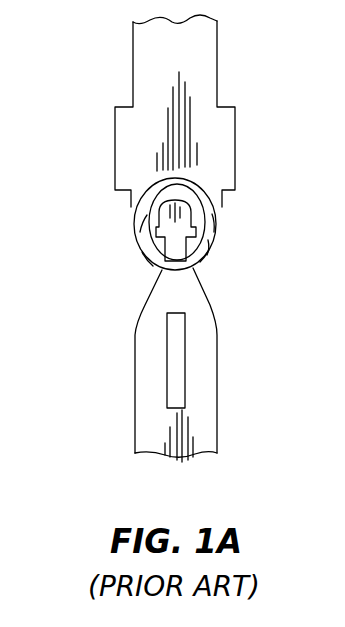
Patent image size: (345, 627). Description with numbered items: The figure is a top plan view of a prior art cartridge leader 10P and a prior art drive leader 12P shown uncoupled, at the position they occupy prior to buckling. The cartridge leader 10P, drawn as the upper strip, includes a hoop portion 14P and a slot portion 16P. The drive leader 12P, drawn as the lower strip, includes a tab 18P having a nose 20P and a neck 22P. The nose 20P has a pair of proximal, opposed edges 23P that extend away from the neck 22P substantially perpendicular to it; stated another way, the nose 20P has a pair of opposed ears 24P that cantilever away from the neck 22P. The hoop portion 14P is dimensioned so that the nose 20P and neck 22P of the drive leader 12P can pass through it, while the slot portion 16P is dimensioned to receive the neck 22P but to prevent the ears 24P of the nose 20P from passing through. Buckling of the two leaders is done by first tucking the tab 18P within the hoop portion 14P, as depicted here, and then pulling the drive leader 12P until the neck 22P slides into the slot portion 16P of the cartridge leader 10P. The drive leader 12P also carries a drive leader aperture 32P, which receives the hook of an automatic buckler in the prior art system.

The cartridge leader 10P is at (218, 57).
The drive leader 12P is at (135, 363).
The hoop portion 14P is at (165, 188).
The slot portion 16P is at (174, 266).
The tab 18P is at (193, 200).
The nose 20P is at (150, 203).
The neck 22P is at (204, 262).
The opposed edges 23P is at (154, 263).
The opposed ears 24P is at (142, 230).
The drive leader aperture 32P is at (188, 353).